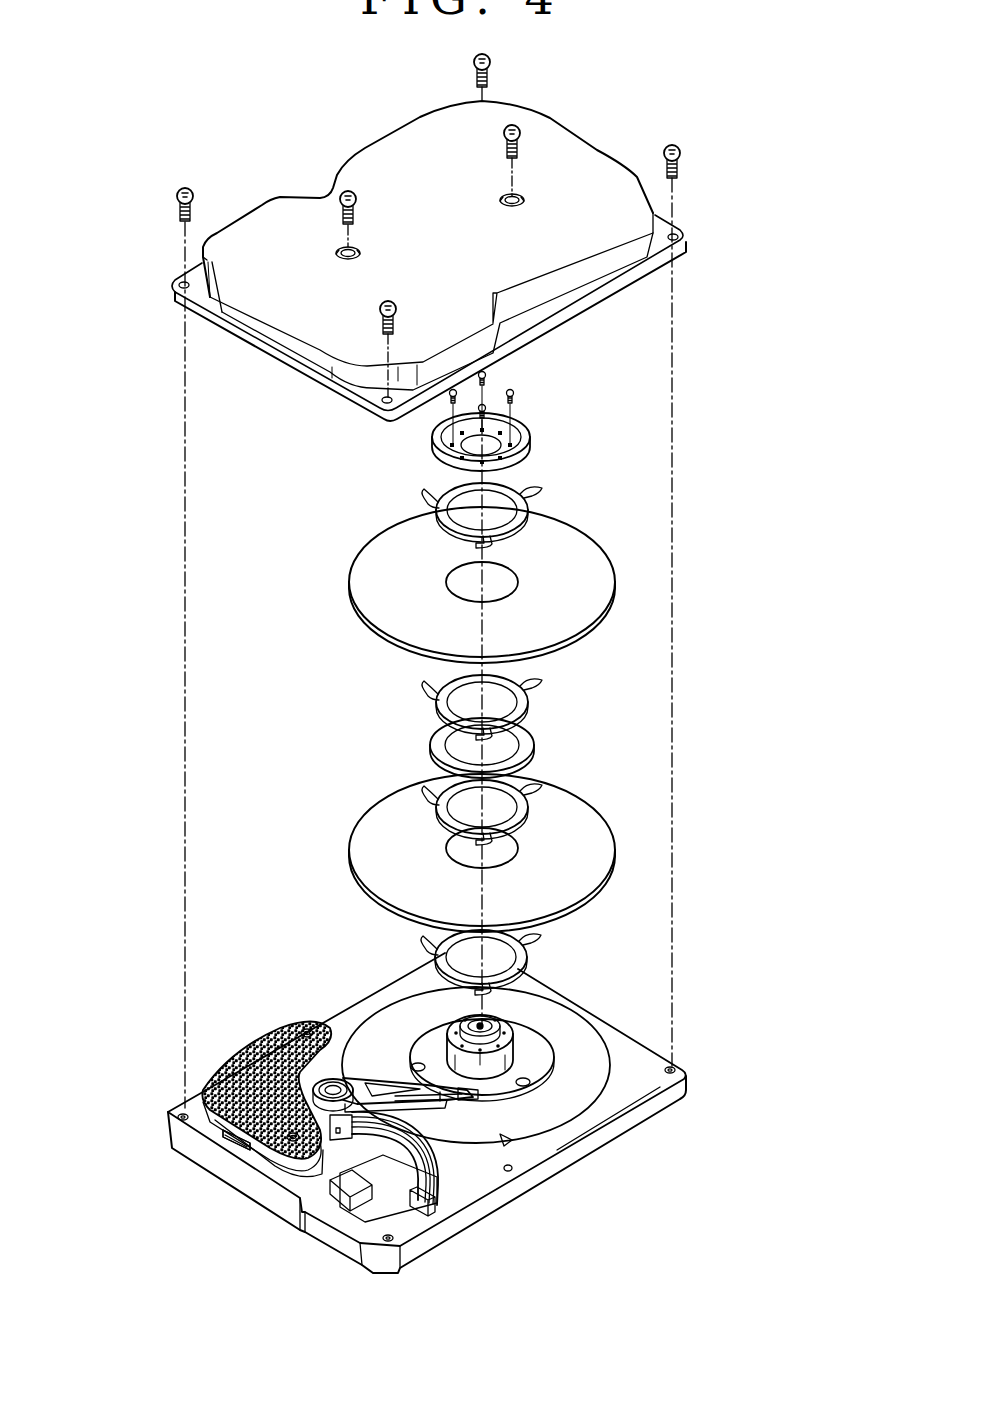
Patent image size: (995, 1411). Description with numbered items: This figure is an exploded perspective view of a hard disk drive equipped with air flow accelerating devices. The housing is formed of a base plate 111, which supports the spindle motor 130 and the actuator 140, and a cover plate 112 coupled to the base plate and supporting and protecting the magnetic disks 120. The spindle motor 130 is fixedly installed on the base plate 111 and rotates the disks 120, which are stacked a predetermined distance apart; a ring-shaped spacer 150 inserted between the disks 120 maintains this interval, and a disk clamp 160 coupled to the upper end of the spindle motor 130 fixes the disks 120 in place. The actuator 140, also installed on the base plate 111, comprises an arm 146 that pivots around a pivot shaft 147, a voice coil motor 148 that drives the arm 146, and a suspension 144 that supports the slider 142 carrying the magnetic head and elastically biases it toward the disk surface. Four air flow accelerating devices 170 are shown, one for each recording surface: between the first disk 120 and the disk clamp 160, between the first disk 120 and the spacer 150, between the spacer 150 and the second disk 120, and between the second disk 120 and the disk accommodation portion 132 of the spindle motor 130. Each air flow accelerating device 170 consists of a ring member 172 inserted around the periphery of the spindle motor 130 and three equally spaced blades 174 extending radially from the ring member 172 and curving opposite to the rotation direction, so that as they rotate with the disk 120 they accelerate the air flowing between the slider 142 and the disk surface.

The base plate 111 is at (632, 1052).
The cover plate 112 is at (588, 163).
The magnetic disk 120 is at (600, 560).
The spindle motor 130 is at (462, 1022).
The disk accommodation portion 132 is at (517, 1047).
The actuator 140 is at (434, 1110).
The slider 142 is at (445, 1098).
The suspension 144 is at (427, 1100).
The arm 146 is at (450, 1103).
The pivot shaft 147 is at (273, 1033).
The voice coil motor 148 is at (257, 1153).
The spacer 150 is at (515, 742).
The disk clamp 160 is at (523, 422).
The air flow accelerating device 170 is at (468, 707).
The ring member 172 is at (433, 510).
The blade 174 is at (427, 493).